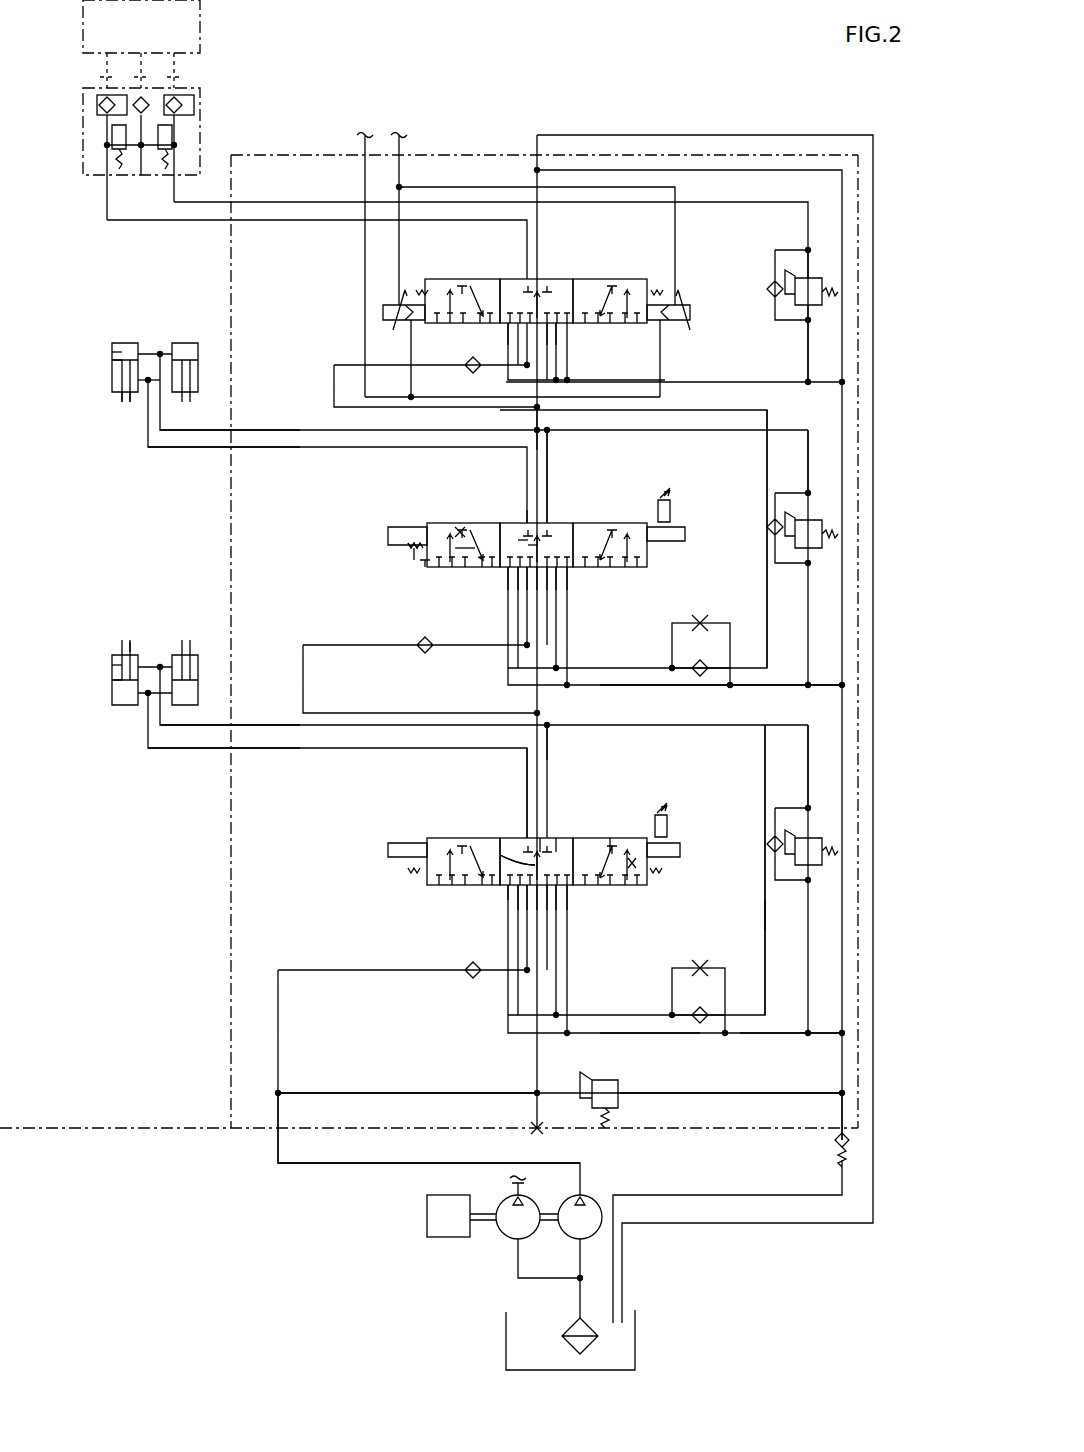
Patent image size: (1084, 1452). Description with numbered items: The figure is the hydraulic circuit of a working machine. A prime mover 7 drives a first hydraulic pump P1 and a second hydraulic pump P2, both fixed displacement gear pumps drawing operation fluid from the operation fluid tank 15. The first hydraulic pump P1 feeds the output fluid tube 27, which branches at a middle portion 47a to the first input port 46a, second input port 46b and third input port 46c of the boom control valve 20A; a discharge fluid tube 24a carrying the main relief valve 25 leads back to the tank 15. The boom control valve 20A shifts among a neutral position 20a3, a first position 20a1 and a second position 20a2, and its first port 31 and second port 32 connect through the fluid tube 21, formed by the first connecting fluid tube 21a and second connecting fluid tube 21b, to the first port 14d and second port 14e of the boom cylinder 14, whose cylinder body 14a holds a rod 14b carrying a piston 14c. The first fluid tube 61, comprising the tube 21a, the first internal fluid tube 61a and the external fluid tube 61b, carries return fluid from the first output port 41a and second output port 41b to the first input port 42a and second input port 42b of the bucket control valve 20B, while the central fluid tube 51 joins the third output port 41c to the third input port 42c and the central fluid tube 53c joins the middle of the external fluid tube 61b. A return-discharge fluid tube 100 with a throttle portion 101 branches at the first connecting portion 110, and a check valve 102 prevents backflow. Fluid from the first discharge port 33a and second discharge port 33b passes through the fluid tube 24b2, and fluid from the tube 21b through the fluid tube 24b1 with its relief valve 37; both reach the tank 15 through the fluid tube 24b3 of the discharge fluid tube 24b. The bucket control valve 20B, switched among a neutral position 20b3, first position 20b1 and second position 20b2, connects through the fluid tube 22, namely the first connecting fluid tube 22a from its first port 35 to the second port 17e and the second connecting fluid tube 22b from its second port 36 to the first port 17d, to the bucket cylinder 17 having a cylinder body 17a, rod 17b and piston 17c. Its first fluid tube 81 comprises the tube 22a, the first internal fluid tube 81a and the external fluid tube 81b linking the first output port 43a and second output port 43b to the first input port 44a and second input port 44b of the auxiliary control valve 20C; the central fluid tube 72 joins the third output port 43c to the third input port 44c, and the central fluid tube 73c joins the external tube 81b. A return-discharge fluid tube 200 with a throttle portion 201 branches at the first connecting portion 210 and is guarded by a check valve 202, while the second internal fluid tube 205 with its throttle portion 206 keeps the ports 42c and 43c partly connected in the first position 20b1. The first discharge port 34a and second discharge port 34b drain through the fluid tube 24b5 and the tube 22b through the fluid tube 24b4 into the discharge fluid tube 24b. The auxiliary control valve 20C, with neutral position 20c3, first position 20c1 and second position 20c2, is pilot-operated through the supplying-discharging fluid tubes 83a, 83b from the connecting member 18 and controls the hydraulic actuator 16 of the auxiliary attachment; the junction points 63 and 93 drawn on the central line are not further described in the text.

The hydraulic actuator 16 is at (200, 30).
The connecting member 18 is at (200, 106).
The bucket cylinder 17 is at (185, 343).
The cylinder body 17a is at (112, 362).
The rod 17b is at (124, 402).
The piston 17c is at (112, 352).
The first port 17d is at (155, 354).
The second port 17e is at (143, 385).
The fluid tube 22 is at (258, 428).
The first connecting fluid tube 22a is at (196, 432).
The second connecting fluid tube 22b is at (145, 449).
The boom cylinder 14 is at (190, 665).
The cylinder body 14a is at (114, 668).
The rod 14b is at (130, 655).
The piston 14c is at (114, 682).
The first port 14d is at (140, 696).
The second port 14e is at (142, 667).
The fluid tube 21 is at (258, 724).
The first connecting fluid tube 21a is at (158, 750).
The second connecting fluid tube 21b is at (200, 727).
The supplying-discharging fluid tube 83a is at (265, 222).
The supplying-discharging fluid tube 83b is at (323, 204).
The auxiliary control valve 20C is at (585, 266).
The first position 20c1 is at (465, 278).
The second position 20c2 is at (625, 276).
The neutral position 20c3 is at (568, 278).
The first input port 44a is at (527, 324).
The second input port 44b is at (552, 324).
The third input port 44c is at (545, 326).
The central fluid tube 72 is at (535, 440).
The junction 93 is at (540, 410).
The bucket control valve 20B is at (578, 488).
The first position 20b1 is at (452, 520).
The second position 20b2 is at (631, 511).
The neutral position 20b3 is at (590, 450).
The first fluid tube 81 is at (770, 445).
The first internal fluid tube 81a is at (462, 540).
The external fluid tube 81b is at (777, 494).
The fluid tube 24b4 is at (810, 520).
The third output port 43c is at (530, 522).
The first port 35 is at (524, 523).
The second port 36 is at (568, 523).
The central fluid tube 73c is at (532, 545).
The throttle portion 206 is at (388, 552).
The second internal fluid tube 205 is at (440, 560).
The first discharge port 34a is at (508, 568).
The first output port 43a is at (518, 568).
The first input port 42a is at (527, 568).
The second discharge port 34b is at (567, 568).
The second output port 43b is at (558, 568).
The second input port 42b is at (549, 568).
The third input port 42c is at (540, 568).
The return-discharge fluid tube 200 is at (724, 623).
The throttle portion 201 is at (700, 622).
The check valve 202 is at (700, 660).
The junction 63 is at (537, 713).
The first connecting portion 210 is at (672, 686).
The fluid tube 24b5 is at (800, 688).
The boom control valve 20A is at (481, 821).
The first position 20a1 is at (455, 836).
The second position 20a2 is at (650, 832).
The neutral position 20a3 is at (507, 836).
The first port 31 is at (527, 836).
The second port 32 is at (557, 838).
The central fluid tube 53c is at (530, 865).
The central fluid tube 51 is at (549, 762).
The third output port 41c is at (542, 836).
The first internal fluid tube 61a is at (612, 838).
The first fluid tube 61 is at (770, 752).
The external fluid tube 61b is at (768, 906).
The fluid tube 24b1 is at (810, 780).
The relief valve 37 is at (815, 842).
The first discharge port 33a is at (508, 886).
The second discharge port 33b is at (567, 886).
The second output port 41b is at (558, 886).
The second input port 46b is at (549, 886).
The third input port 46c is at (540, 886).
The first output port 41a is at (518, 890).
The first input port 46a is at (527, 975).
The return-discharge fluid tube 100 is at (724, 968).
The throttle portion 101 is at (700, 966).
The check valve 102 is at (708, 1015).
The first connecting portion 110 is at (662, 1035).
The fluid tube 24b2 is at (783, 1035).
The fluid tube 24b3 is at (845, 1038).
The discharge fluid tube 24b is at (846, 1082).
The middle portion 47a is at (280, 1093).
The main relief valve 25 is at (602, 1080).
The discharge fluid tube 24a is at (722, 1095).
The output fluid tube 27 is at (355, 1165).
The prime mover 7 is at (440, 1238).
The first hydraulic pump P1 is at (595, 1202).
The second hydraulic pump P2 is at (508, 1232).
The operation fluid tank 15 is at (637, 1330).